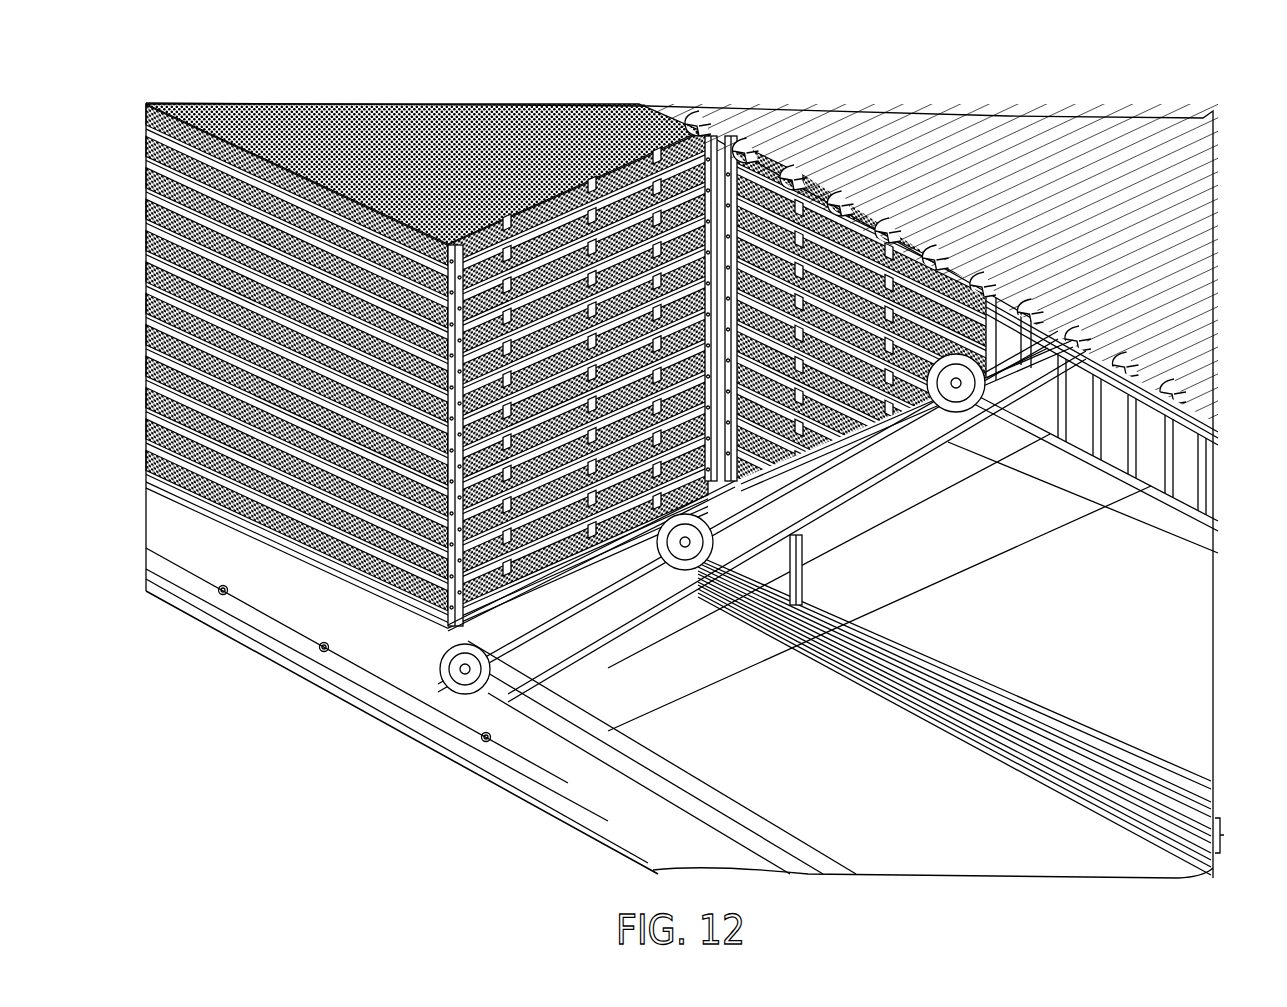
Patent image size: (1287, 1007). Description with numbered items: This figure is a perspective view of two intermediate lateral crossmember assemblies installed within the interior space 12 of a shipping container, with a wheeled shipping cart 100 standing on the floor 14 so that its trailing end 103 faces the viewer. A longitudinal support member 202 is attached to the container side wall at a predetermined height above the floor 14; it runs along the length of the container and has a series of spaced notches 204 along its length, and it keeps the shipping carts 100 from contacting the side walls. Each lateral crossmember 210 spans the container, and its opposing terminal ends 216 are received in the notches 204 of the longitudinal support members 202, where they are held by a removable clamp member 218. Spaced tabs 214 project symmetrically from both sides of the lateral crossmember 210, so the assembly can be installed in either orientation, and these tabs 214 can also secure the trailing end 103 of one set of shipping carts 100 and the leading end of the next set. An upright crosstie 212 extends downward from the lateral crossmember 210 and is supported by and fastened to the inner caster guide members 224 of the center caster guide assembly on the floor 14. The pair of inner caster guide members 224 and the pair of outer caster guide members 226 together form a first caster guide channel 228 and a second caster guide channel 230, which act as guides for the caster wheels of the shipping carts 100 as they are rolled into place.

The wheeled shipping cart 100 is at (391, 96).
The trailing end 103 is at (603, 186).
The interior space 12 is at (889, 836).
The floor 14 is at (1095, 599).
The longitudinal support member 202 is at (680, 766).
The notch 204 is at (470, 685).
The lateral crossmember 210 is at (990, 477).
The upright crosstie 212 is at (795, 555).
The tab 214 is at (795, 472).
The terminal end 216 is at (1205, 398).
The clamp member 218 is at (445, 628).
The inner caster guide member 224 is at (1239, 835).
The outer caster guide member 226 is at (1190, 765).
The first caster guide channel 228 is at (1020, 702).
The second caster guide channel 230 is at (1052, 768).